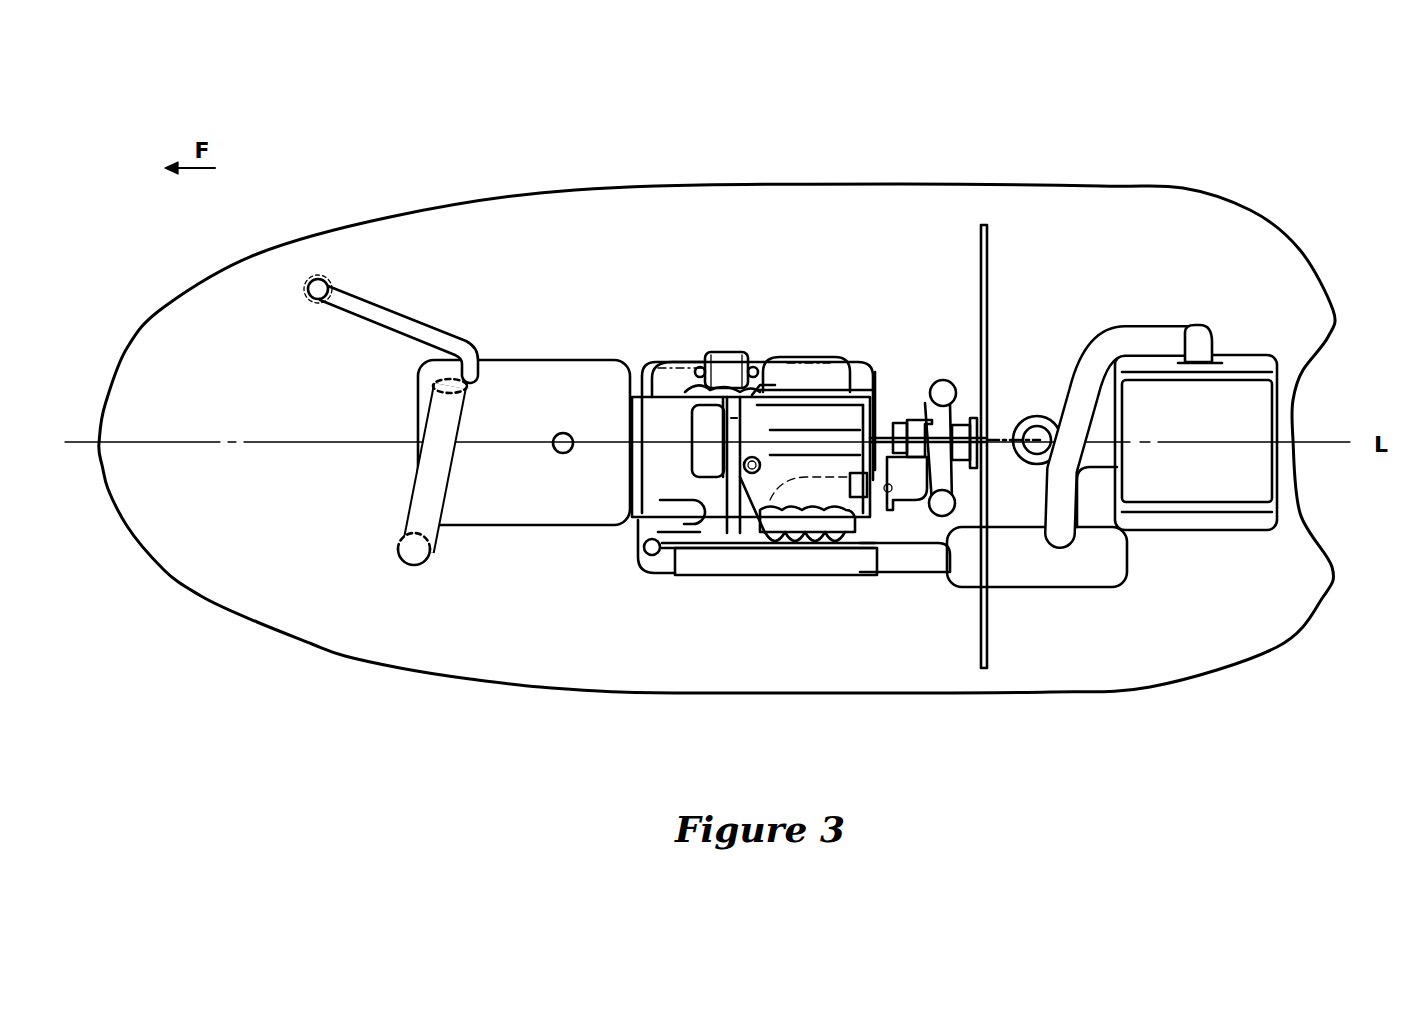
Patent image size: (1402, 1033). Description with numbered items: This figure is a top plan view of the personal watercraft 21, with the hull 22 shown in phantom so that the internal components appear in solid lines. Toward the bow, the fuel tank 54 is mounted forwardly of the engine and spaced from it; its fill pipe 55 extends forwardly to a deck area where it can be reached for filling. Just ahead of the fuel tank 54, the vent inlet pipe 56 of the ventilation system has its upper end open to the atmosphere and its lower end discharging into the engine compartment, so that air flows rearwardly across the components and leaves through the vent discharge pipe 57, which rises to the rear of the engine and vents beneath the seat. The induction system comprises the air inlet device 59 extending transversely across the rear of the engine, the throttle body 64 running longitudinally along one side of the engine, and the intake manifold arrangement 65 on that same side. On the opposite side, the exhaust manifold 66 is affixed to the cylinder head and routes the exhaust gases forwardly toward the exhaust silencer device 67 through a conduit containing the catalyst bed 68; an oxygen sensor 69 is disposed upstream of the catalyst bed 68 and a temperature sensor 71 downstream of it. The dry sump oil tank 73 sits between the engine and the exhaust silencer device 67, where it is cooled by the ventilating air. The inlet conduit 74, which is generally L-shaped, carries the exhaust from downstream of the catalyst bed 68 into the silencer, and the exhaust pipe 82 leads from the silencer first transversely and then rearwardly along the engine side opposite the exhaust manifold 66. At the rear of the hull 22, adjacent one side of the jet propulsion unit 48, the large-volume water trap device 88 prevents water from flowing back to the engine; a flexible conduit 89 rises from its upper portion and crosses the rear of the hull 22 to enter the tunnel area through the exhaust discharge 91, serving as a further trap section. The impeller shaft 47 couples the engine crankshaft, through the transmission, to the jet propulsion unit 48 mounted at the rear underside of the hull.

The personal watercraft 21 is at (1058, 178).
The hull assembly 22 is at (983, 693).
The impeller shaft 47 is at (995, 430).
The jet propulsion unit 48 is at (1203, 538).
The fuel tank 54 is at (507, 527).
The fill pipe 55 is at (392, 307).
The vent inlet pipe 56 is at (408, 520).
The vent discharge pipe 57 is at (945, 380).
The air inlet device 59 is at (920, 565).
The throttle body 64 is at (710, 437).
The intake manifold arrangement 65 is at (800, 560).
The exhaust manifold 66 is at (823, 378).
The exhaust silencer device 67 is at (640, 485).
The catalyst bed 68 is at (722, 350).
The oxygen sensor 69 is at (697, 368).
The temperature sensor 71 is at (760, 364).
The dry sump oil tank 73 is at (706, 432).
The inlet conduit 74 is at (648, 552).
The exhaust pipe 82 is at (887, 577).
The water trap device 88 is at (1072, 590).
The flexible conduit 89 is at (1100, 340).
The exhaust discharge 91 is at (1210, 338).